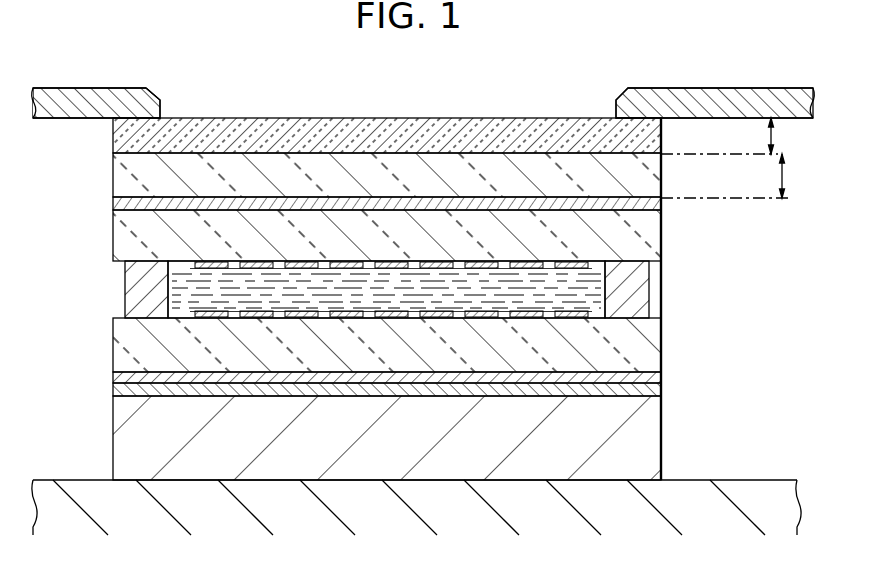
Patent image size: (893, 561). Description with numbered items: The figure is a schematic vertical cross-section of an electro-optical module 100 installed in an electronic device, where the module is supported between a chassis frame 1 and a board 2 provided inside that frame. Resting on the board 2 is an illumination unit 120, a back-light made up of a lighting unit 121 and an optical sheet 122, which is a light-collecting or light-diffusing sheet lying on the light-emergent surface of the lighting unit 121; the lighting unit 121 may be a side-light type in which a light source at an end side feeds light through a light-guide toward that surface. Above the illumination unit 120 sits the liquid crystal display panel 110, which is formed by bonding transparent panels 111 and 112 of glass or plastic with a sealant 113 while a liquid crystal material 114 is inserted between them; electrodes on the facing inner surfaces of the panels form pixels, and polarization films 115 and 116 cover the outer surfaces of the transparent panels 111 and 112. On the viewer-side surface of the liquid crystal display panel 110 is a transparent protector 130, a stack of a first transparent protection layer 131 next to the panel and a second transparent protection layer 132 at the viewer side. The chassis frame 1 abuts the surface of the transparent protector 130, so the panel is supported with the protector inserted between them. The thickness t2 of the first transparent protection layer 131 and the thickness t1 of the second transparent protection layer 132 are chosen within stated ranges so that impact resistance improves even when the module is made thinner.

The chassis frame 1 is at (122, 88).
The board 2 is at (783, 487).
The electro-optical module 100 is at (425, 270).
The liquid crystal display panel 110 is at (382, 288).
The transparent panel 111 is at (118, 332).
The transparent panel 112 is at (118, 231).
The sealant 113 is at (130, 291).
The liquid crystal material 114 is at (593, 300).
The polarization film 115 is at (118, 377).
The polarization film 116 is at (116, 204).
The illumination unit 120 is at (382, 431).
The lighting unit 121 is at (118, 443).
The optical sheet 122 is at (118, 391).
The transparent protector 130 is at (382, 130).
The first transparent protection layer 131 is at (118, 164).
The second transparent protection layer 132 is at (262, 124).
The thickness of the second transparent protection layer t1 is at (729, 136).
The thickness of the first transparent protection layer t2 is at (737, 176).